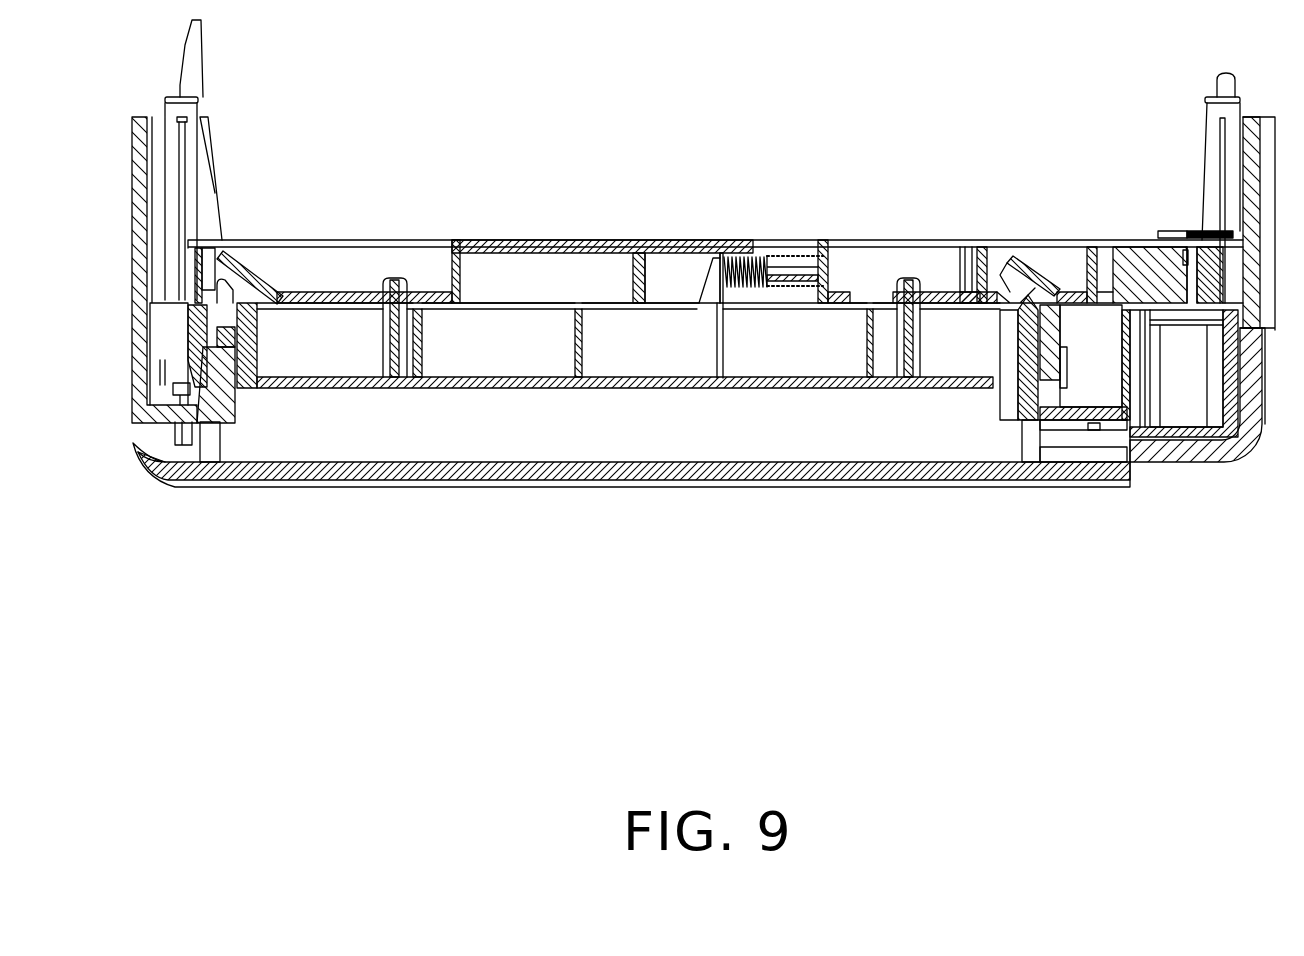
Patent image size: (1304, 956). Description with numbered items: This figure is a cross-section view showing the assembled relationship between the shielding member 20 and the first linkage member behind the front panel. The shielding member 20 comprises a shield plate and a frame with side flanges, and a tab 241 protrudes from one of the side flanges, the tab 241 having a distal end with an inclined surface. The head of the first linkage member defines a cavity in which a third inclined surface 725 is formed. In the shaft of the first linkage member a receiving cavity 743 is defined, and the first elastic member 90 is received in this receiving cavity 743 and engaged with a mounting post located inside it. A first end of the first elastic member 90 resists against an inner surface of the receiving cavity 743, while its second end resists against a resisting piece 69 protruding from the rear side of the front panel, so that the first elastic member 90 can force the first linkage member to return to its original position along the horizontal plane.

The shielding member 20 is at (697, 470).
The resisting piece 69 is at (720, 314).
The first elastic member 90 is at (747, 253).
The tab 241 is at (1000, 308).
The third inclined surface 725 is at (1038, 260).
The receiving cavity 743 is at (657, 275).